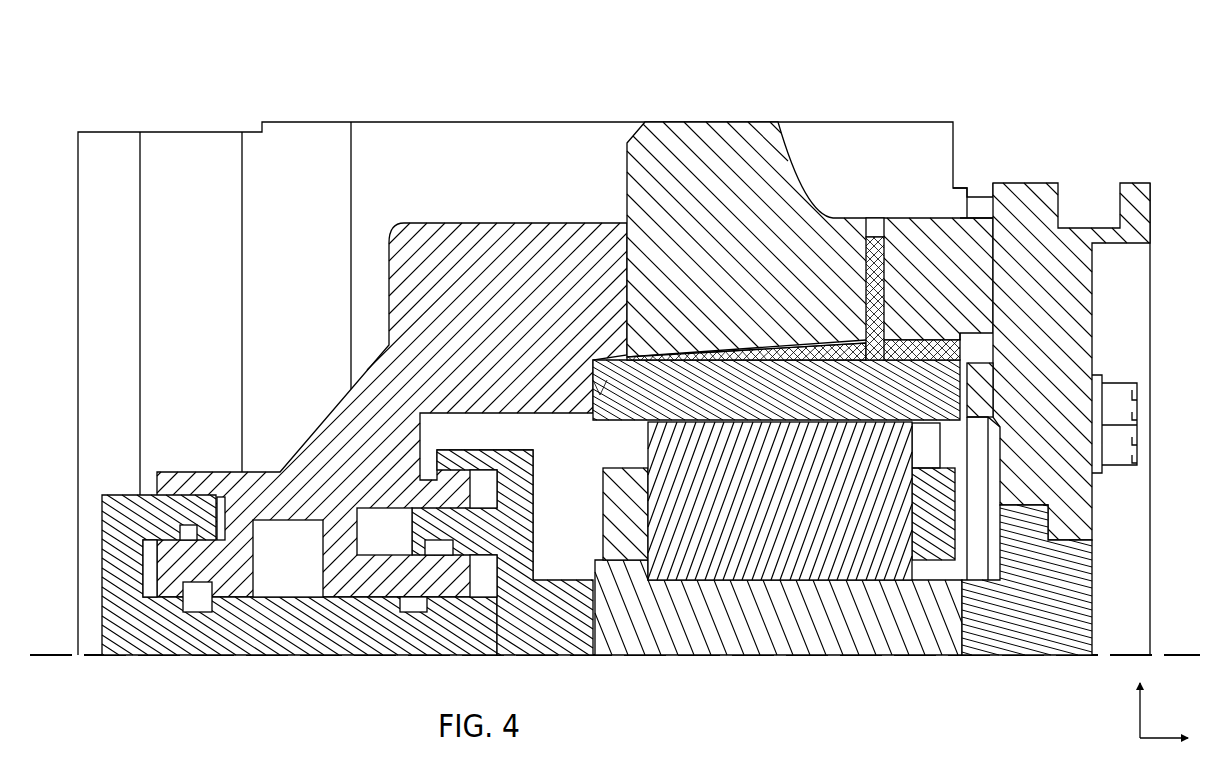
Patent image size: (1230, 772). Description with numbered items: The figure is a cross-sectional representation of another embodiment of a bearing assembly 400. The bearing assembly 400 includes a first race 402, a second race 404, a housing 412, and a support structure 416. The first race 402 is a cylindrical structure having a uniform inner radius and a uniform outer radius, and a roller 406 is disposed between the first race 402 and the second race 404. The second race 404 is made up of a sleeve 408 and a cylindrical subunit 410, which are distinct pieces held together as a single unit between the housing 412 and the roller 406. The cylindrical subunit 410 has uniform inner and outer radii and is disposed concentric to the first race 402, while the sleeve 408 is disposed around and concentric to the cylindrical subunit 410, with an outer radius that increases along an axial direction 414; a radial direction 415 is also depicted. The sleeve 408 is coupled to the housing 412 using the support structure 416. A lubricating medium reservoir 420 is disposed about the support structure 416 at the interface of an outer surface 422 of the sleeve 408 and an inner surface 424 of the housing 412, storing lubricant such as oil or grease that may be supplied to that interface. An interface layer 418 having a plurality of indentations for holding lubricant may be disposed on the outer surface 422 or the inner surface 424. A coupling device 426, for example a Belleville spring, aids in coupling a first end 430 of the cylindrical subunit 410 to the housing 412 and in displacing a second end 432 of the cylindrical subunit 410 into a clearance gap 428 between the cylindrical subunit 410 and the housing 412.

The bearing assembly 400 is at (1100, 40).
The first race 402 is at (785, 633).
The second race 404 is at (925, 435).
The roller 406 is at (828, 553).
The sleeve 408 is at (982, 222).
The cylindrical subunit 410 is at (593, 360).
The housing 412 is at (647, 143).
The axial direction 414 is at (1150, 741).
The radial direction 415 is at (1135, 692).
The support structure 416 is at (880, 217).
The interface layer 418 is at (795, 343).
The lubricating medium reservoir 420 is at (905, 340).
The outer surface 422 is at (745, 377).
The inner surface 424 is at (710, 353).
The coupling device 426 is at (598, 390).
The clearance gap 428 is at (967, 377).
The first end 430 is at (598, 413).
The second end 432 is at (960, 413).